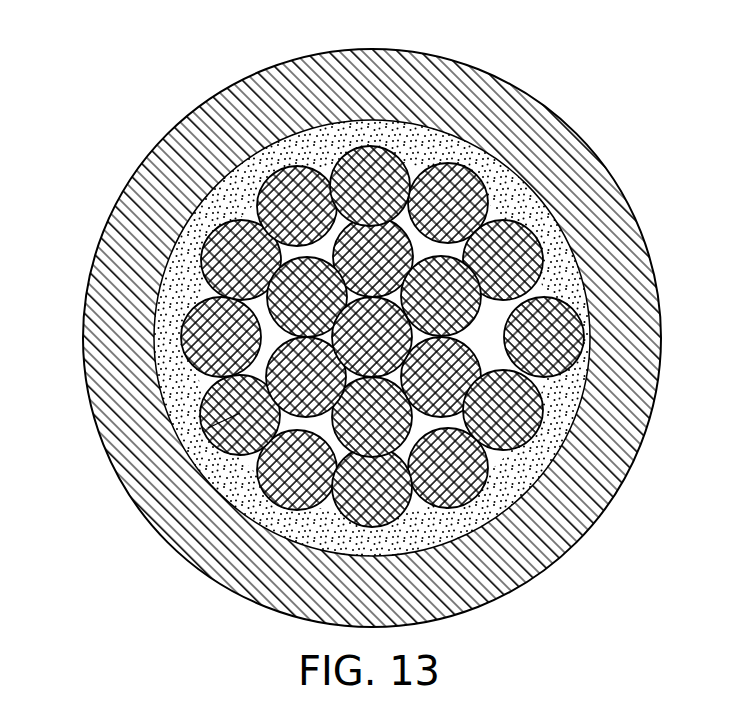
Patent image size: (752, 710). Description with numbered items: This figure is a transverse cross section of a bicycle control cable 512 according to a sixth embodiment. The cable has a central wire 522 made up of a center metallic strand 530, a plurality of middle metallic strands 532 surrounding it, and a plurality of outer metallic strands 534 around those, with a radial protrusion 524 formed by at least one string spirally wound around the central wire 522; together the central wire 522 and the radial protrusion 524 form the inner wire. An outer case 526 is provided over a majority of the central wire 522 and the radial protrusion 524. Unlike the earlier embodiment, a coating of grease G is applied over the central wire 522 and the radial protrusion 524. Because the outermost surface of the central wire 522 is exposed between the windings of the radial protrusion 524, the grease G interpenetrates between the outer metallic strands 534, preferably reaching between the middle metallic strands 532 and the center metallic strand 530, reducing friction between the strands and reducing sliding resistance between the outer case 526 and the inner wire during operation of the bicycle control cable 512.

The bicycle control cable 512 is at (598, 84).
The central wire 522 is at (507, 202).
The radial protrusion 524 is at (567, 335).
The outer case 526 is at (587, 534).
The center metallic strand 530 is at (352, 330).
The middle metallic strands 532 is at (215, 338).
The outer metallic strands 534 is at (202, 508).
The grease G is at (557, 427).